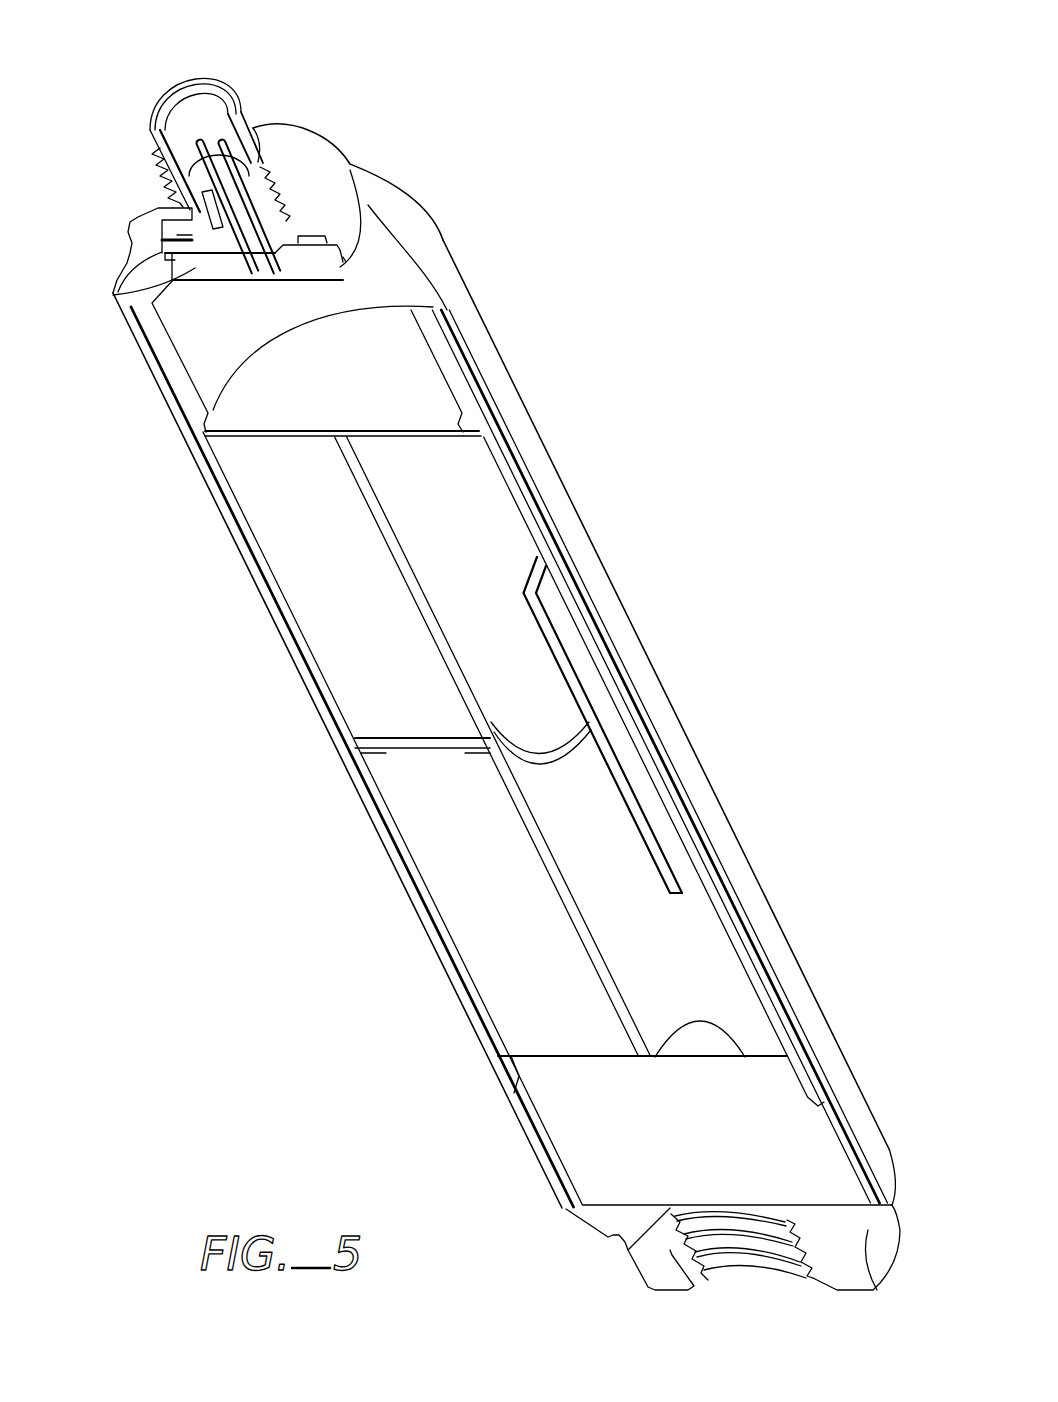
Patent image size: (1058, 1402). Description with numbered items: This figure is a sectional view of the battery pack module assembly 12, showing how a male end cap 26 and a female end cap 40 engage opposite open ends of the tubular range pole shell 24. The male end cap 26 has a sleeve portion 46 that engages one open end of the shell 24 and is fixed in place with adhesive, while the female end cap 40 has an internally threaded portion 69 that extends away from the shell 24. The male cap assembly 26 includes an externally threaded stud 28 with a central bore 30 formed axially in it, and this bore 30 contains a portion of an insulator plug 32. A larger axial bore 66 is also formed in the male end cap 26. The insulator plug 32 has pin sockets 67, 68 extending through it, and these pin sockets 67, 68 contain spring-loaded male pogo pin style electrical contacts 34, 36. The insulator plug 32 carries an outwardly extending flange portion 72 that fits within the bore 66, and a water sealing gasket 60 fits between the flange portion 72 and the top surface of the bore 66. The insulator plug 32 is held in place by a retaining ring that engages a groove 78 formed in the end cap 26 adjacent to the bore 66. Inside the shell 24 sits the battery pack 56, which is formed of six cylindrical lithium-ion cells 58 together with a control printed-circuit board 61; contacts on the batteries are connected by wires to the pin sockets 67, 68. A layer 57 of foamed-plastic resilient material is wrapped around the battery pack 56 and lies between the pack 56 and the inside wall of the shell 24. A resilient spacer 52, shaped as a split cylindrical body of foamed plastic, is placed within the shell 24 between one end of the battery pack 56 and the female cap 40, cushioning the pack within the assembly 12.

The battery pack module assembly 12 is at (622, 374).
The tubular range pole shell 24 is at (564, 530).
The male end cap 26 is at (298, 179).
The externally threaded stud 28 is at (255, 128).
The central bore 30 is at (177, 113).
The insulator plug 32 is at (187, 170).
The spring-loaded male pogo pin electrical contact 34 is at (193, 137).
The spring-loaded male pogo pin electrical contact 36 is at (278, 166).
The female end cap 40 is at (750, 1273).
The sleeve portion 46 is at (182, 386).
The resilient spacer 52 is at (750, 1122).
The battery pack 56 is at (486, 739).
The layer of foamed-plastic resilient material 57 is at (573, 607).
The cylindrical lithium-ion cell 58 is at (485, 474).
The water sealing gasket 60 is at (130, 220).
The control printed-circuit board 61 is at (637, 767).
The larger axial bore 66 is at (190, 282).
The pin socket 67 is at (255, 233).
The pin socket 68 is at (350, 198).
The internally threaded portion 69 is at (722, 1262).
The flange portion 72 is at (312, 244).
The groove 78 is at (343, 262).